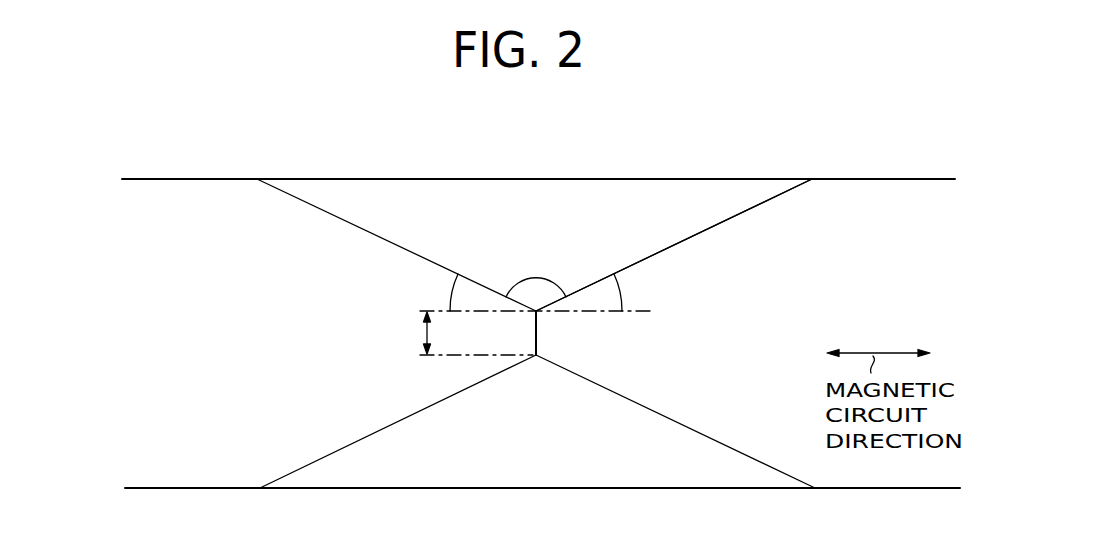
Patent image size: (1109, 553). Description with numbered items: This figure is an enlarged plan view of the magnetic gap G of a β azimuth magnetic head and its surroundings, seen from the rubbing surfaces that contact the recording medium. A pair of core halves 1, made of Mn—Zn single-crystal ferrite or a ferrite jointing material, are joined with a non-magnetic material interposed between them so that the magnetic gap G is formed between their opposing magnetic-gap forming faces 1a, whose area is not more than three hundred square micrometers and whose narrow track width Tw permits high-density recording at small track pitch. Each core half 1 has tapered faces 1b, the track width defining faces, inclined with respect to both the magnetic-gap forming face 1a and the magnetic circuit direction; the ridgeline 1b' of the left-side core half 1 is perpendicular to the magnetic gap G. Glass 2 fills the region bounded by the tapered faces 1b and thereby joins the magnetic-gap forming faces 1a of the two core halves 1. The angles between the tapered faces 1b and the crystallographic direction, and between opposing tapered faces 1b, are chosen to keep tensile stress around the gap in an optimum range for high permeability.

The core half 1 is at (192, 465).
The magnetic-gap forming face 1a is at (535, 333).
The tapered face 1b is at (675, 343).
The ridgeline 1b' is at (396, 342).
The glass 2 is at (748, 192).
The magnetic gap G is at (538, 320).
The track width Tw is at (402, 333).